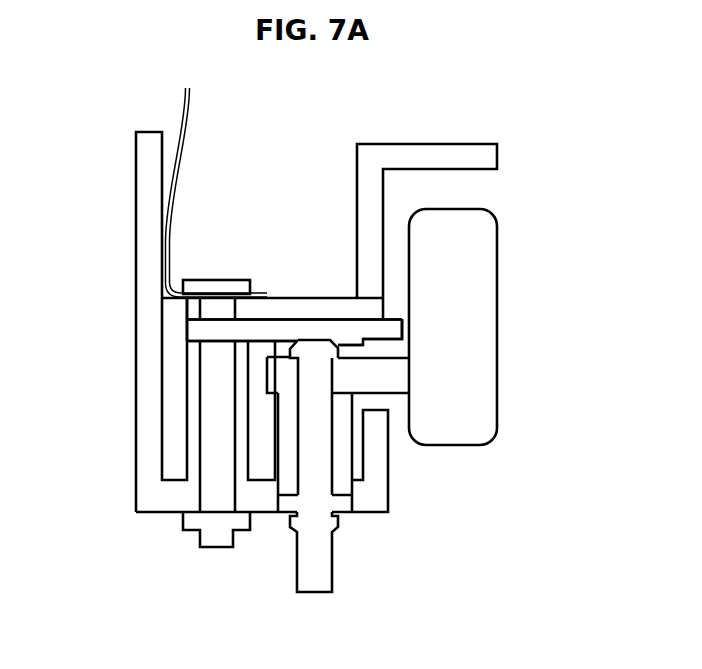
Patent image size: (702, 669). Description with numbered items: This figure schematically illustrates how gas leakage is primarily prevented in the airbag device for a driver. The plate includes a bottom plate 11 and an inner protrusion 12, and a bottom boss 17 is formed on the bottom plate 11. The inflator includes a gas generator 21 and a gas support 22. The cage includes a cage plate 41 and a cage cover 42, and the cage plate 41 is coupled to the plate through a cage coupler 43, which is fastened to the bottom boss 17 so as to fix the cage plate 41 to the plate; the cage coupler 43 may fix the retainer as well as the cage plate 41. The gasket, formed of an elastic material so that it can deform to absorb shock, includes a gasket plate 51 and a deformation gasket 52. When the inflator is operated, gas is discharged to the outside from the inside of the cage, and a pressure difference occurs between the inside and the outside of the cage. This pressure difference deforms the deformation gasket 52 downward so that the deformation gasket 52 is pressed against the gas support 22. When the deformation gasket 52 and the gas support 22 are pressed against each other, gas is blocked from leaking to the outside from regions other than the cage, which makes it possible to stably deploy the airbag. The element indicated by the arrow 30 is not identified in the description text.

The bottom plate 11 is at (265, 507).
The inner protrusion 12 is at (373, 460).
The bottom boss 17 is at (193, 405).
The gas generator 21 is at (498, 433).
The gas support 22 is at (380, 393).
The outlet port 30 is at (335, 563).
The cage plate 41 is at (282, 297).
The cage cover 42 is at (371, 143).
The cage coupler 43 is at (220, 285).
The gasket plate 51 is at (313, 330).
The deformation gasket 52 is at (391, 320).